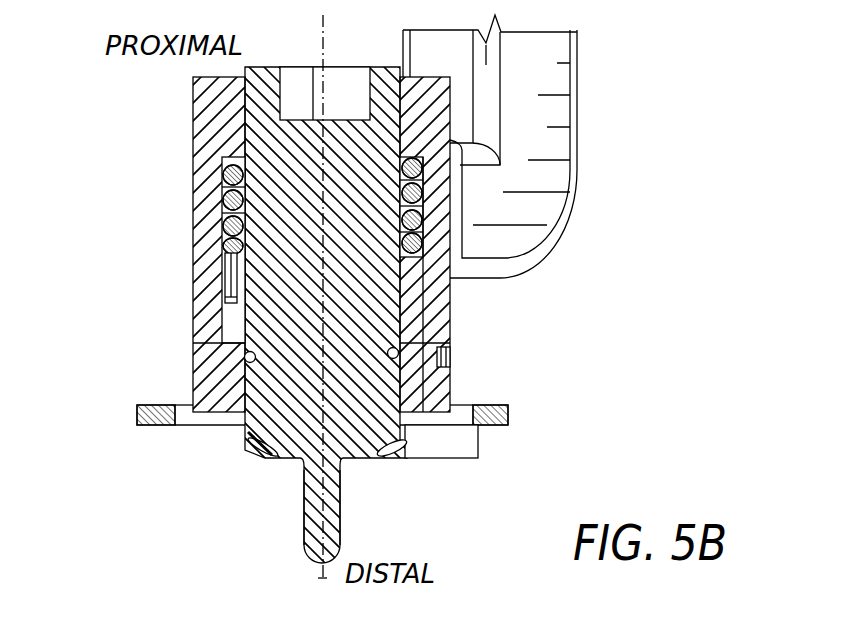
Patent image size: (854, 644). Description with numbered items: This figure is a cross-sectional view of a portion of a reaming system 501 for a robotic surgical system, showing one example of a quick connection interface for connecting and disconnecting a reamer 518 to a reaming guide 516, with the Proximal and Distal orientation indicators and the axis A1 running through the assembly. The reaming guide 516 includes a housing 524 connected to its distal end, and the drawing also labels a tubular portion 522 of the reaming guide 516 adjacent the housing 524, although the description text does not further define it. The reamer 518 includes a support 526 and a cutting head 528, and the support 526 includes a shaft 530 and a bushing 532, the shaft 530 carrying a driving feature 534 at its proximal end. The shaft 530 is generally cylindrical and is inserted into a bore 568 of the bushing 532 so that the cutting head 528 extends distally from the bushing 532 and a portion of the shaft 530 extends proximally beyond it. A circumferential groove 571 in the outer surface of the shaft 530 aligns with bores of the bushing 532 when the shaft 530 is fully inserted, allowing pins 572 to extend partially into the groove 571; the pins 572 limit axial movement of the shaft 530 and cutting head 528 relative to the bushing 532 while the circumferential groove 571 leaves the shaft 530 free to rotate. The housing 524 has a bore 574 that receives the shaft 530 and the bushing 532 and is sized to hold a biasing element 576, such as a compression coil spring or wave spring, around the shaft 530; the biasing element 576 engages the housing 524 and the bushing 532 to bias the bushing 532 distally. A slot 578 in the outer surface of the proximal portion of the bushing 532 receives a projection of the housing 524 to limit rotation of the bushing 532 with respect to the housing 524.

The reaming system 501 is at (427, 296).
The reaming guide 516 is at (553, 265).
The reamer 518 is at (455, 513).
The tube 522 is at (563, 82).
The housing 524 is at (208, 147).
The support 526 is at (368, 443).
The cutting head 528 is at (310, 490).
The shaft 530 is at (247, 430).
The bushing 532 is at (210, 358).
The driving feature 534 is at (302, 80).
The bore of the bushing 568 is at (400, 282).
The groove 571 is at (245, 352).
The pins 572 is at (243, 357).
The bore of the housing 574 is at (222, 197).
The biasing element 576 is at (420, 220).
The slot 578 is at (225, 262).
The axis A1 is at (322, 578).